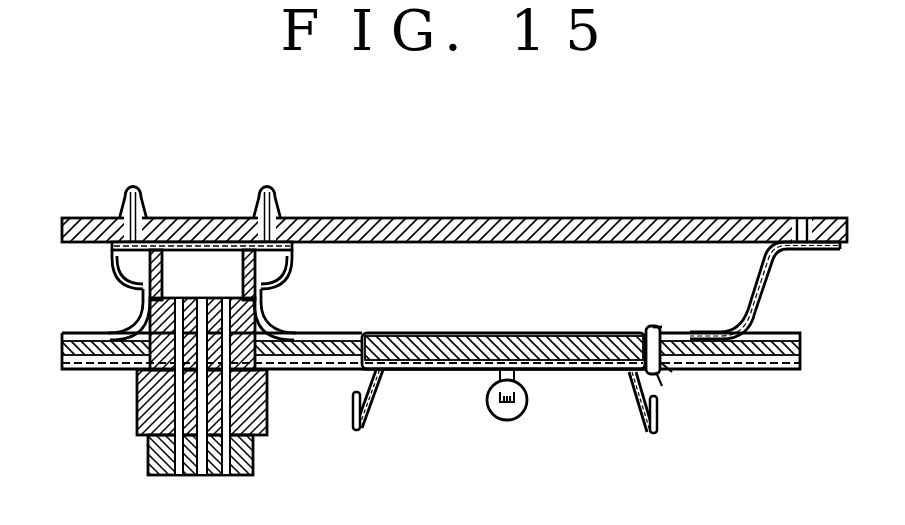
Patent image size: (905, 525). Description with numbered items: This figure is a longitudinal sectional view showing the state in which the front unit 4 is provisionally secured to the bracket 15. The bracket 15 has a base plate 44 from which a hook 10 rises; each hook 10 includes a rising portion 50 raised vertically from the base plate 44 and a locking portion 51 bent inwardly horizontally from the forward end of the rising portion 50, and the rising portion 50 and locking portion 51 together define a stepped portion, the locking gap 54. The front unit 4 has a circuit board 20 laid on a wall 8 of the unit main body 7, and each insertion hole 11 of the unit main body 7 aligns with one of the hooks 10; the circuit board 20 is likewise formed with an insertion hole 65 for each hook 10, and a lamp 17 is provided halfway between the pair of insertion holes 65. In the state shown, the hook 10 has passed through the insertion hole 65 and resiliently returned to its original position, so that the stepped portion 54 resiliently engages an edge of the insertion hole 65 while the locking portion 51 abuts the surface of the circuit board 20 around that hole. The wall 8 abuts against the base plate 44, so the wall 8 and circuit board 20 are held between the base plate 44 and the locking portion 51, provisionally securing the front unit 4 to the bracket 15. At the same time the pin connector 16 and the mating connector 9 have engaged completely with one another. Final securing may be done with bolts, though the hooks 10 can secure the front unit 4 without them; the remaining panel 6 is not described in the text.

The front unit 4 is at (110, 388).
The panel 6 is at (678, 218).
The unit main body 7 is at (759, 336).
The wall 8 is at (552, 333).
The connector 9 is at (247, 455).
The hook 10 is at (364, 428).
The insertion hole 11 is at (665, 332).
The bracket 15 is at (774, 269).
The pin connector 16 is at (262, 398).
The lamp 17 is at (495, 417).
The circuit board 20 is at (548, 370).
The base plate 44 is at (710, 328).
The rising portion 50 is at (652, 336).
The locking portion 51 is at (632, 404).
The locking gap 54 is at (664, 382).
The insertion hole 65 is at (672, 370).